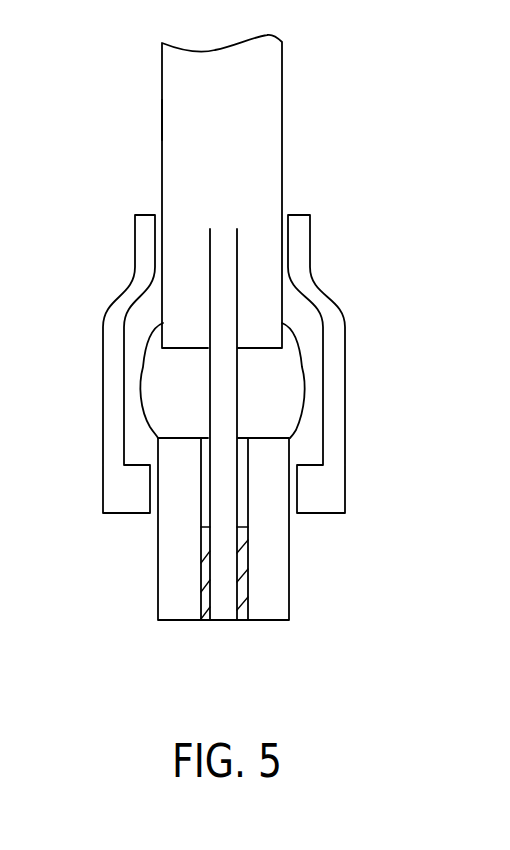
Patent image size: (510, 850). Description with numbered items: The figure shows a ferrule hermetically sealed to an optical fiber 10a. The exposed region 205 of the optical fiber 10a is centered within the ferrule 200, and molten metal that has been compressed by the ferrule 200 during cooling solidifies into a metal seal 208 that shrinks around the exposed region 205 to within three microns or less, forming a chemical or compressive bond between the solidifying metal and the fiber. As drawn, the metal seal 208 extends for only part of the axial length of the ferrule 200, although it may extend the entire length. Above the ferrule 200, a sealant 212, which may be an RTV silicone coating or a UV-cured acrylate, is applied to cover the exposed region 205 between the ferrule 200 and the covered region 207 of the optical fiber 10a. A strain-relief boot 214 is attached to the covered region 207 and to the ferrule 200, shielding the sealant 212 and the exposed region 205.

The optical fiber 10a is at (262, 200).
The covered region 207 is at (162, 118).
The exposed region 205 is at (220, 389).
The strain-relief boot 214 is at (333, 454).
The sealant 212 is at (288, 383).
The ferrule 200 is at (272, 518).
The metal seal 208 is at (243, 607).